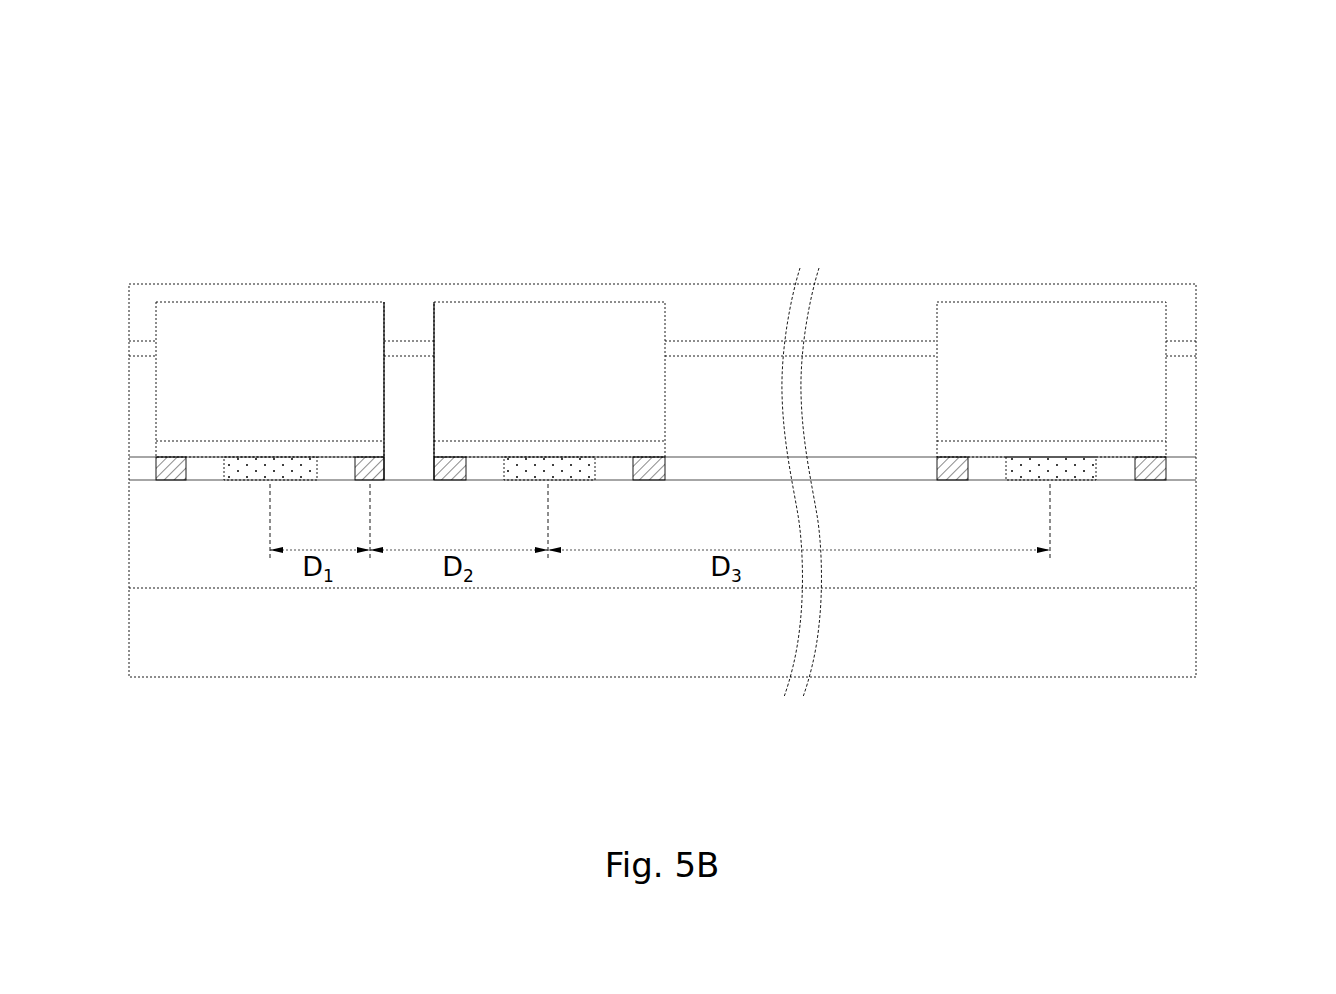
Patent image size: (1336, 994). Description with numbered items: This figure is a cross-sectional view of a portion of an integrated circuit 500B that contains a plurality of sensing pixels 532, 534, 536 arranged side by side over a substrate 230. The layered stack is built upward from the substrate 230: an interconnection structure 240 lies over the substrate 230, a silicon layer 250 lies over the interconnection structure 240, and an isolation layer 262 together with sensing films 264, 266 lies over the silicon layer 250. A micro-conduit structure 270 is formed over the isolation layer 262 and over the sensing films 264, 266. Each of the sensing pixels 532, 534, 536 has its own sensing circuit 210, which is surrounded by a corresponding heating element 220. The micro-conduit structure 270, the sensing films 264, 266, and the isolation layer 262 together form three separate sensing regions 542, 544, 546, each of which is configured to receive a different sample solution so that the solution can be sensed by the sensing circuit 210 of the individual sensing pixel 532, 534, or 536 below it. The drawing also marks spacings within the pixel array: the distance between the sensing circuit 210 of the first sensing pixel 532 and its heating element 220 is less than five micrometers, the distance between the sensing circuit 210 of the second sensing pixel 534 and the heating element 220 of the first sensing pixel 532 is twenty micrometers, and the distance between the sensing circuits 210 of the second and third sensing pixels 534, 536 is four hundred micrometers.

The integrated circuit 500B is at (1240, 116).
The sensing circuit 210 is at (237, 482).
The heating element 220 is at (170, 482).
The substrate 230 is at (641, 645).
The interconnection structure 240 is at (1084, 573).
The silicon layer 250 is at (1204, 457).
The isolation layer 262 is at (709, 415).
The sensing film 264 is at (190, 452).
The sensing film 266 is at (142, 344).
The micro-conduit structure 270 is at (411, 298).
The sensing pixel 532 is at (270, 300).
The sensing pixel 534 is at (549, 300).
The sensing pixel 536 is at (1051, 299).
The sensing region 542 is at (249, 383).
The sensing region 544 is at (529, 383).
The sensing region 546 is at (1031, 383).